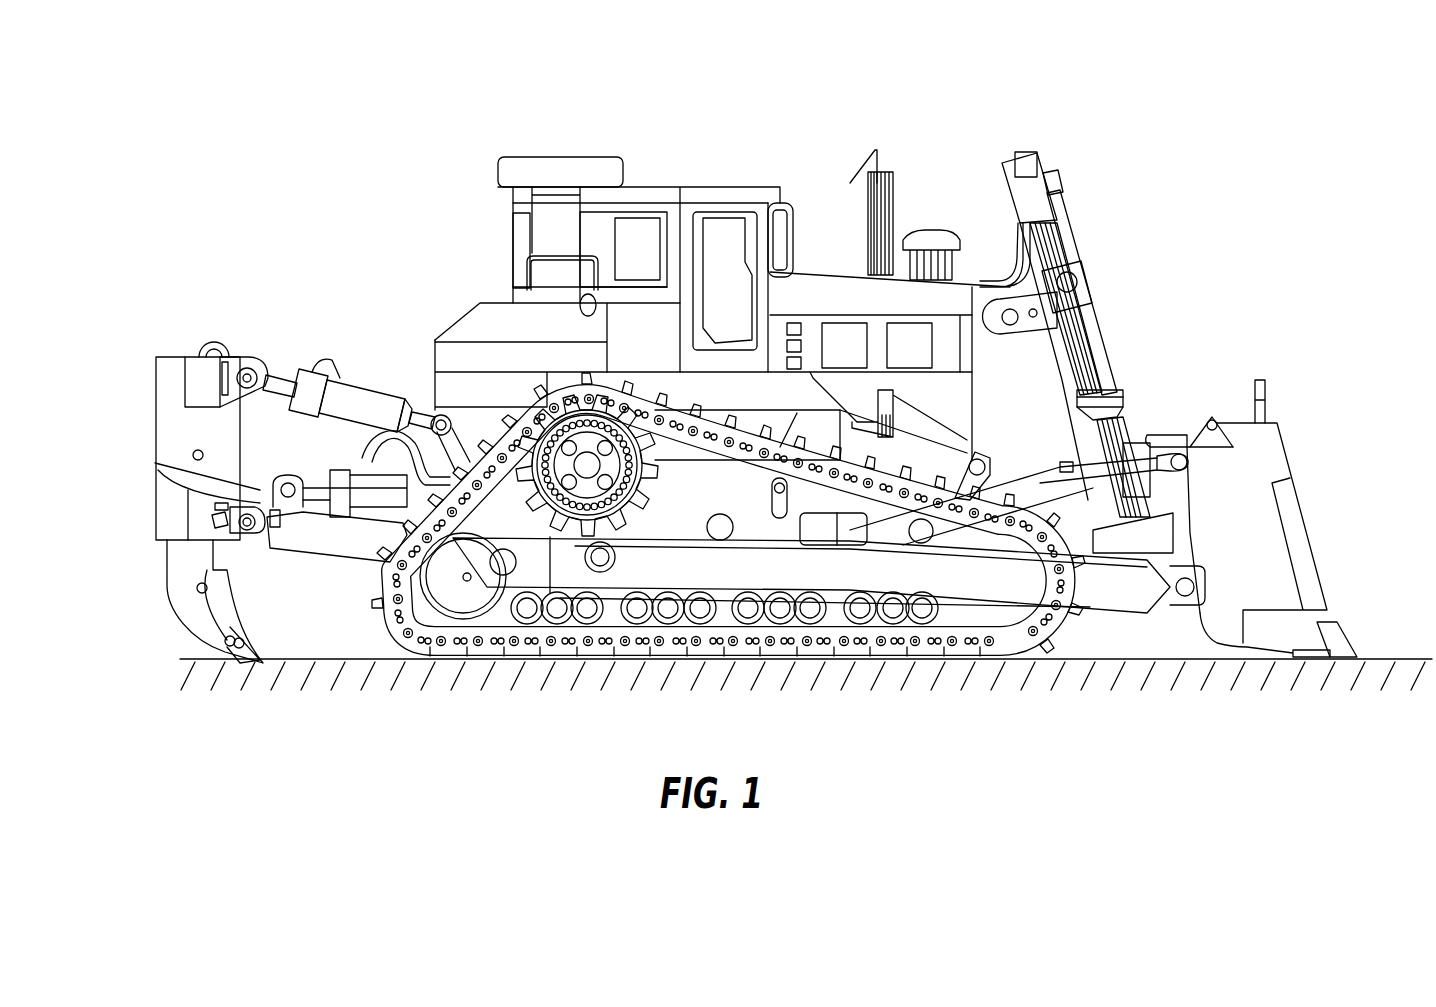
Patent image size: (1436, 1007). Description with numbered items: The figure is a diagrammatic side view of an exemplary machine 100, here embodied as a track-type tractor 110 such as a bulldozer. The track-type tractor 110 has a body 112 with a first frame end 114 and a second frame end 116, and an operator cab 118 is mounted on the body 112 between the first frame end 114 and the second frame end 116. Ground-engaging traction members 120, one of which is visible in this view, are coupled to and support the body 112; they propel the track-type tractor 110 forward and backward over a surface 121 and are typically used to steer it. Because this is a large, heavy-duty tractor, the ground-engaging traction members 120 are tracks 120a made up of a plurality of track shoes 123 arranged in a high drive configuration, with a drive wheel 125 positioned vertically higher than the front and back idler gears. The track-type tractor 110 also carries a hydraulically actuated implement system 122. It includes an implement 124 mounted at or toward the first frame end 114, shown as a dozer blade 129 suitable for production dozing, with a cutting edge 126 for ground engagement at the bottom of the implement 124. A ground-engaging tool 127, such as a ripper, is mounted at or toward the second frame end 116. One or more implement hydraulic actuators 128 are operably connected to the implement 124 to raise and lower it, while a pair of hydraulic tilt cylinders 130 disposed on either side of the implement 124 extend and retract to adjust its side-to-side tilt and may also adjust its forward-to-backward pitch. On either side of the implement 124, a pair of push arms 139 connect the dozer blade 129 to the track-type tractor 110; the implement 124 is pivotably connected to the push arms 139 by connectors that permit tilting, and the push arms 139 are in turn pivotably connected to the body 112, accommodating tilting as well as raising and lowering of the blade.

The machine 100 is at (266, 170).
The track-type tractor 110 is at (750, 386).
The body 112 is at (443, 318).
The first frame end 114 is at (1090, 433).
The second frame end 116 is at (433, 357).
The operator cab 118 is at (758, 220).
The ground-engaging traction members 120 is at (428, 657).
The tracks 120a is at (689, 693).
The surface 121 is at (1347, 667).
The hydraulically actuated implement system 122 is at (1058, 86).
The track shoes 123 is at (702, 423).
The implement 124 is at (1287, 483).
The drive wheel 125 is at (587, 440).
The cutting edge 126 is at (1357, 655).
The ground-engaging tool 127 is at (157, 441).
The implement hydraulic actuators 128 is at (1077, 250).
The dozer blade 129 is at (1310, 511).
The hydraulic tilt cylinders 130 is at (1078, 487).
The push arms 139 is at (900, 575).